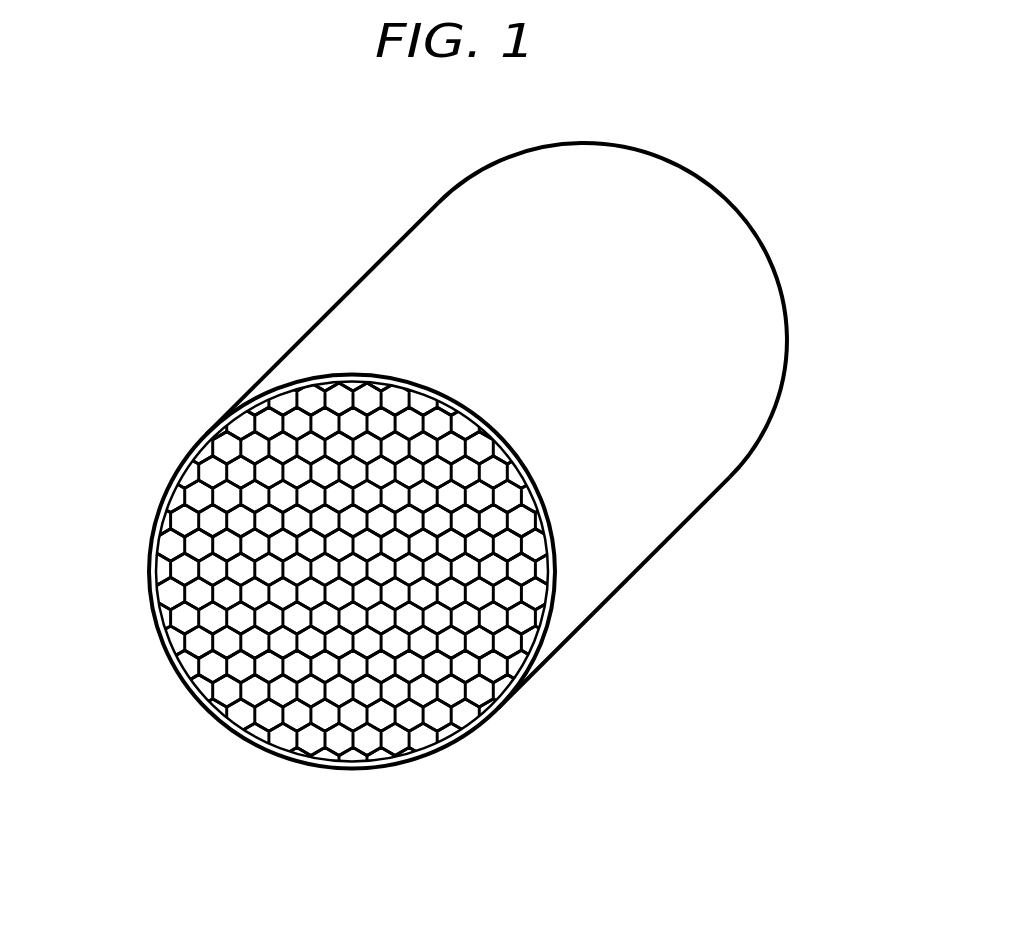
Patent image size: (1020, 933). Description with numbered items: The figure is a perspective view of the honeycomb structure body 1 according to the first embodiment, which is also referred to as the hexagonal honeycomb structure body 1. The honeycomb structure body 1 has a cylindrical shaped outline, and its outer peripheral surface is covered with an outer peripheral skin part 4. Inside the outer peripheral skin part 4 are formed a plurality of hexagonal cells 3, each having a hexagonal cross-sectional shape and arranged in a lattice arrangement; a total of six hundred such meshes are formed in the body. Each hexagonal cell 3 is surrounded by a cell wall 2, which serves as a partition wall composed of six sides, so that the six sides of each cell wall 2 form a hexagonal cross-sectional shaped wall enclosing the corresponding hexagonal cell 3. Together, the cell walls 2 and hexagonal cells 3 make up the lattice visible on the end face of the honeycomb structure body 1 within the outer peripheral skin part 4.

The honeycomb structure body 1 is at (480, 511).
The cell wall 2 is at (447, 477).
The hexagonal cell 3 is at (295, 473).
The outer peripheral skin part 4 is at (680, 197).